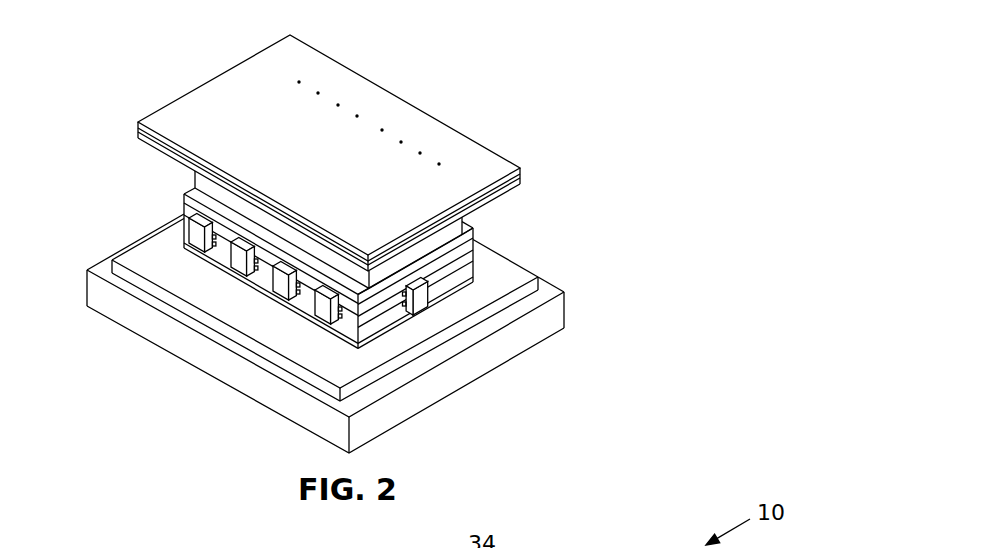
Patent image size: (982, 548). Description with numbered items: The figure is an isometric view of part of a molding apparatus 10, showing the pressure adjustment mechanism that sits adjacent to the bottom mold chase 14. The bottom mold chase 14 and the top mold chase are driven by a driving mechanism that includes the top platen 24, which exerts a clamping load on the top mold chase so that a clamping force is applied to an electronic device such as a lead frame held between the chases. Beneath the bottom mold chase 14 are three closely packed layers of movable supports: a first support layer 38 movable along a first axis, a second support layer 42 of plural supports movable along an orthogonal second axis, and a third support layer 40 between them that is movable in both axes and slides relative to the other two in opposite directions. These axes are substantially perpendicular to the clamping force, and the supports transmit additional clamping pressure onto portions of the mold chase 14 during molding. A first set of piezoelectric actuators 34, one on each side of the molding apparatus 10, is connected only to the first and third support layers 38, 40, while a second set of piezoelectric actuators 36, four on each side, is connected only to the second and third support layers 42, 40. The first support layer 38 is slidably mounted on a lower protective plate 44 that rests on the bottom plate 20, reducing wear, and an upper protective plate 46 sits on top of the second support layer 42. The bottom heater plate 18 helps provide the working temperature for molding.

The molding apparatus 10 is at (622, 71).
The bottom mold chase 14 is at (187, 174).
The bottom heater plate 18 is at (574, 312).
The bottom plate 20 is at (548, 279).
The top platen 24 is at (216, 68).
The first set of piezoelectric actuators 34 is at (436, 277).
The second set of piezoelectric actuators 36 is at (214, 256).
The first support layer 38 is at (176, 239).
The third support layer 40 is at (343, 242).
The second support layer 42 is at (177, 199).
The lower protective plate 44 is at (482, 274).
The upper protective plate 46 is at (481, 223).